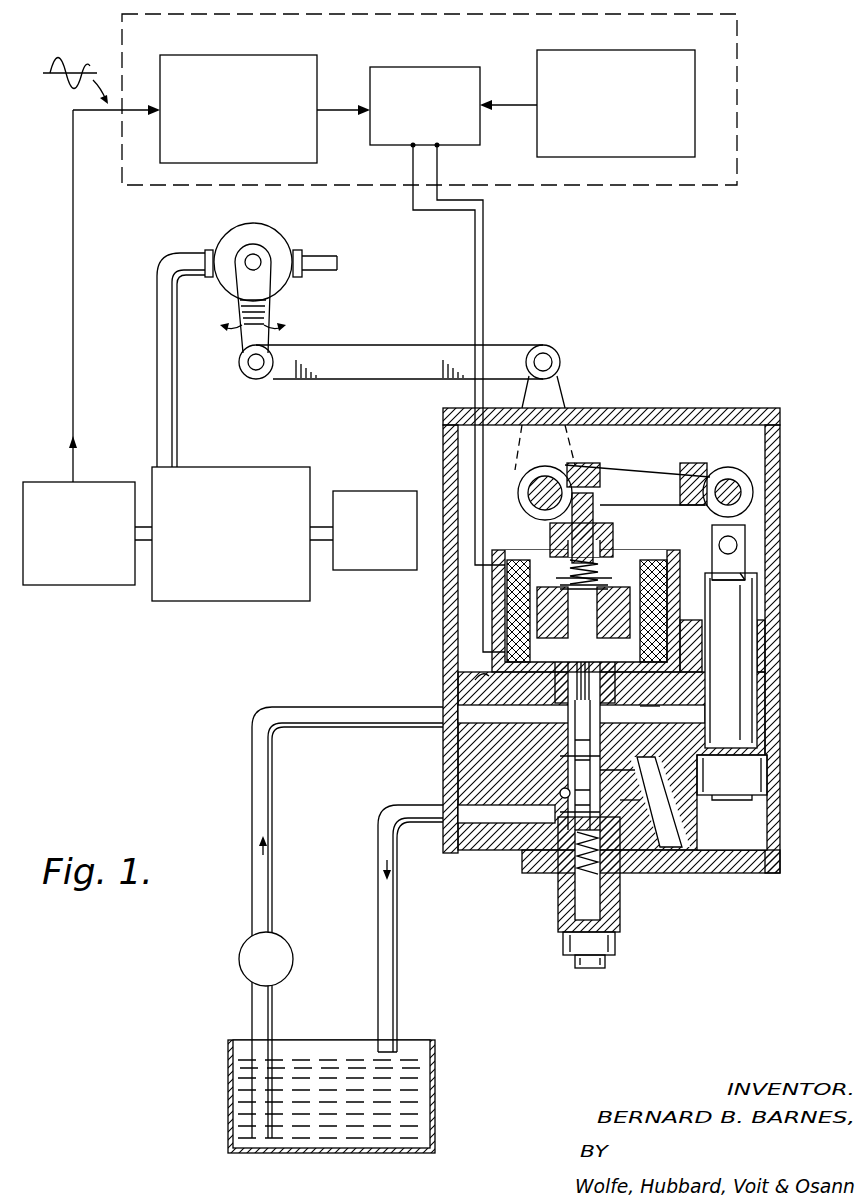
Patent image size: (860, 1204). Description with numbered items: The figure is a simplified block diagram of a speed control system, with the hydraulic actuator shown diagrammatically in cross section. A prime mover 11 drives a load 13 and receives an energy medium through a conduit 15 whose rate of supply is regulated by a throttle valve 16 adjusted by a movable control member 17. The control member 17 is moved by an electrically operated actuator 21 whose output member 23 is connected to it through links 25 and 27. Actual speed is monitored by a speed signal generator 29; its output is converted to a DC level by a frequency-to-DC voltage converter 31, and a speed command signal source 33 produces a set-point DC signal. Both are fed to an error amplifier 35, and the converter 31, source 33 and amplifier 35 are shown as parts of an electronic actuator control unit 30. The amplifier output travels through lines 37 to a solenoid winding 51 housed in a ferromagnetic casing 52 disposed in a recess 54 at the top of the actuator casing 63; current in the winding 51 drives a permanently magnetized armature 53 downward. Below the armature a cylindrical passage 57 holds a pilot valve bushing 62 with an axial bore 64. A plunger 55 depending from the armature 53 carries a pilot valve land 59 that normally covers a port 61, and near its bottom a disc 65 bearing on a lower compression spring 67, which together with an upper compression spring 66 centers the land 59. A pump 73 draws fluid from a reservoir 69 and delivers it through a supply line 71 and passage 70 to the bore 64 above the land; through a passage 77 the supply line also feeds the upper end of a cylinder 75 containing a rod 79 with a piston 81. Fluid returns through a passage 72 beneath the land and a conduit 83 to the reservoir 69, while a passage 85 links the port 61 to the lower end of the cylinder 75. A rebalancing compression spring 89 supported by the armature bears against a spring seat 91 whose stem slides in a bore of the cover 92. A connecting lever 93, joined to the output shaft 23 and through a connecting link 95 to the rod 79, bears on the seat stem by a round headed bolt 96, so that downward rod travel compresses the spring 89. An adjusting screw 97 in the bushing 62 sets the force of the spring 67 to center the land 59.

The prime mover 11 is at (205, 601).
The load 13 is at (357, 495).
The conduit 15 is at (161, 366).
The throttle valve 16 is at (275, 238).
The movable control member 17 is at (243, 334).
The electrically operated actuator 21 is at (760, 399).
The output member 23 is at (547, 477).
The link 25 is at (555, 398).
The link 27 is at (380, 353).
The speed signal generator 29 is at (60, 585).
The electronic actuator control unit 30 is at (742, 93).
The frequency-to-DC voltage converter 31 is at (212, 158).
The speed command signal source 33 is at (620, 157).
The error amplifier 35 is at (400, 146).
The lines 37 is at (477, 279).
The solenoid winding 51 is at (507, 589).
The ferromagnetic casing 52 is at (525, 612).
The armature 53 is at (505, 657).
The recess 54 is at (485, 680).
The plunger 55 is at (575, 736).
The cylindrical passage 57 is at (622, 800).
The pilot valve land 59 is at (580, 761).
The port 61 is at (612, 772).
The pilot valve bushing 62 is at (565, 906).
The actuator casing 63 is at (446, 776).
The axial bore 64 is at (560, 793).
The disc 65 is at (585, 818).
The upper compression spring 66 is at (615, 563).
The lower compression spring 67 is at (566, 866).
The reservoir 69 is at (436, 1084).
The passage 70 is at (520, 727).
The supply line 71 is at (262, 791).
The passage 72 is at (505, 822).
The pump 73 is at (288, 942).
The cylinder 75 is at (771, 823).
The passage 77 is at (652, 700).
The rod 79 is at (748, 726).
The piston 81 is at (762, 779).
The conduit 83 is at (392, 973).
The passage 85 is at (702, 808).
The rebalancing compression spring 89 is at (596, 558).
The spring seat 91 is at (552, 534).
The cover 92 is at (668, 562).
The connecting lever 93 is at (670, 479).
The connecting link 95 is at (746, 508).
The round headed bolt 96 is at (593, 482).
The adjusting screw 97 is at (588, 963).